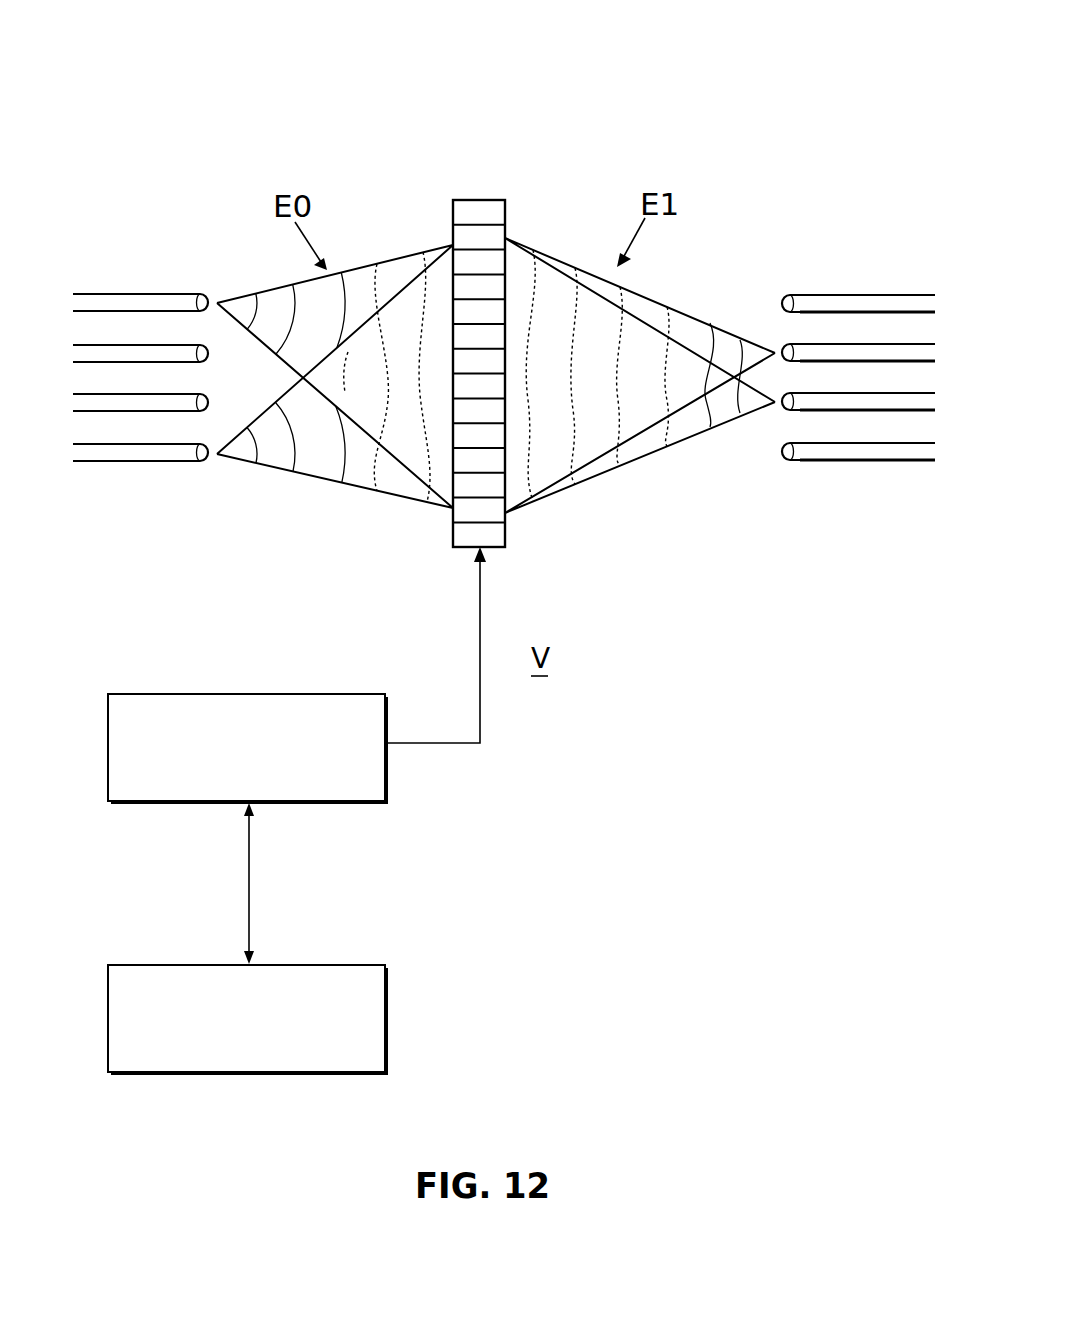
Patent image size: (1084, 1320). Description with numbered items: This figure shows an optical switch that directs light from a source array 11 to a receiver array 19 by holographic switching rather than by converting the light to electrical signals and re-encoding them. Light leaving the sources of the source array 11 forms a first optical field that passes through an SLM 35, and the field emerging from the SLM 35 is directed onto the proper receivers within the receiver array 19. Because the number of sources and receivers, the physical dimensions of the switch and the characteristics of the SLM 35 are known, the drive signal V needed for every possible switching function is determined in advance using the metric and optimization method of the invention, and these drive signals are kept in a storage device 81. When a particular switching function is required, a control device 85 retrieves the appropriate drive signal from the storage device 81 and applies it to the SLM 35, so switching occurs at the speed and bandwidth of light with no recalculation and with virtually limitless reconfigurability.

The source array 11 is at (146, 270).
The receiver array 19 is at (858, 268).
The SLM 35 is at (477, 200).
The control device 85 is at (330, 694).
The storage device 81 is at (330, 965).